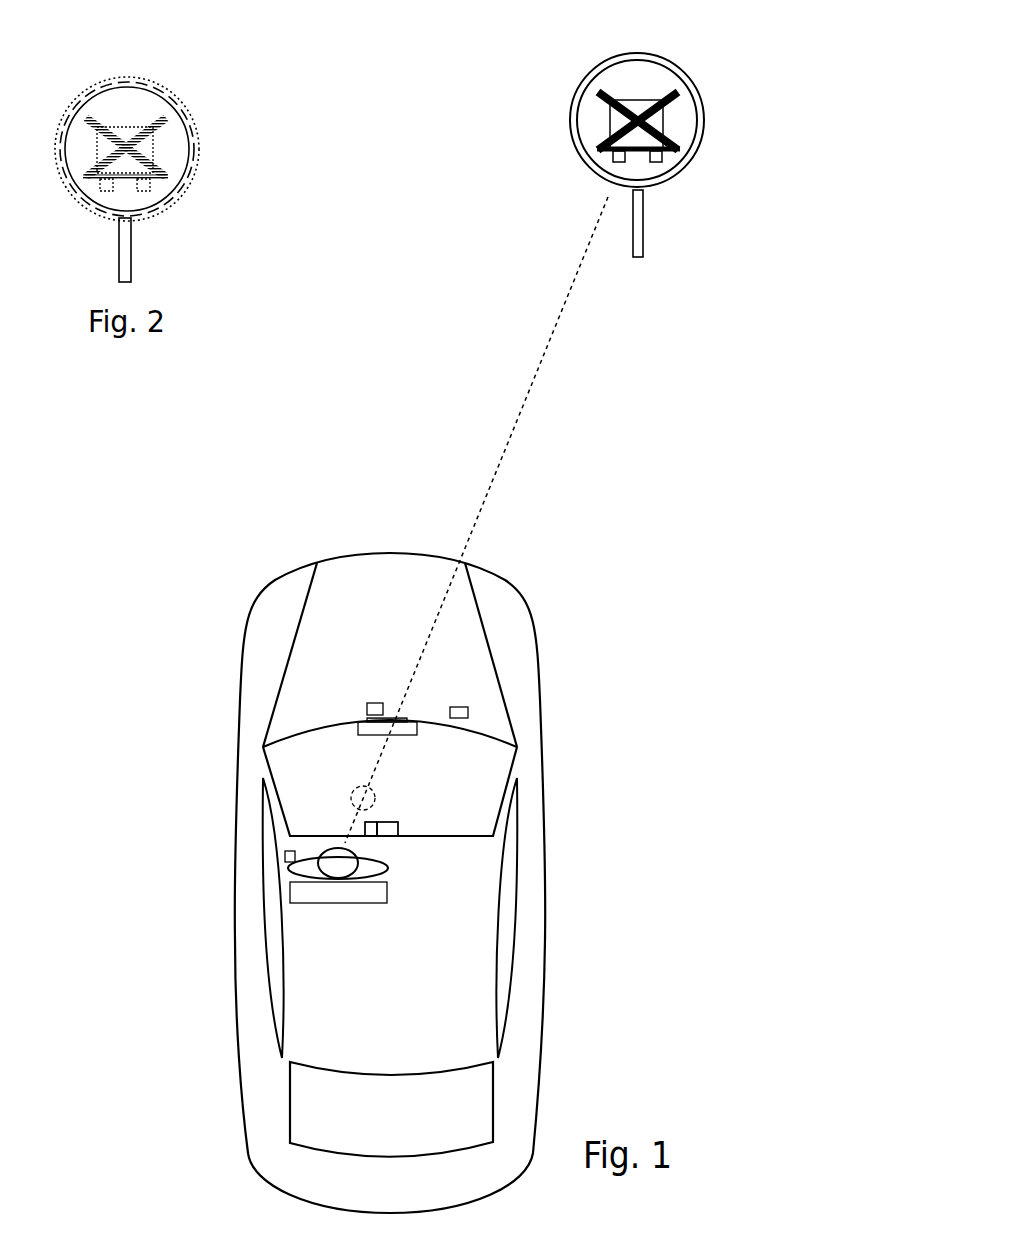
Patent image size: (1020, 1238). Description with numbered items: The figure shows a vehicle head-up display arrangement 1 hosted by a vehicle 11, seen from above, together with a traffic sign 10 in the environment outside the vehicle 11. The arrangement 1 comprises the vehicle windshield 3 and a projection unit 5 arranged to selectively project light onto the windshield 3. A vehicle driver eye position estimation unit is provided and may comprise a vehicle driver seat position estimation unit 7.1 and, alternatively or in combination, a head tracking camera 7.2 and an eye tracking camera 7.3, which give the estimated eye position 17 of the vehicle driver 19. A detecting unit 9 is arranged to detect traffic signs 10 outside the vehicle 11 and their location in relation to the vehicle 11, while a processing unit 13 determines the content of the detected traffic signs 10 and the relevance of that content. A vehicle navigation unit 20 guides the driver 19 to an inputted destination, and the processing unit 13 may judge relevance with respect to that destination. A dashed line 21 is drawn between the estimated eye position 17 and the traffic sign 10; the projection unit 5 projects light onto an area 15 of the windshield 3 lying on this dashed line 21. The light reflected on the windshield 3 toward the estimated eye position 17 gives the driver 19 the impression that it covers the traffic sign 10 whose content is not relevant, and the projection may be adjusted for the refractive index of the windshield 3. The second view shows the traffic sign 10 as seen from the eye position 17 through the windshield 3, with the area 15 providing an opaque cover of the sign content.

In FIG. 1, the vehicle head-up display arrangement 1 is at (313, 680).
In FIG. 1, the vehicle windshield 3 is at (514, 755).
In FIG. 1, the projection unit 5 is at (402, 737).
In FIG. 1, the vehicle driver seat position estimation unit 7.1 is at (283, 857).
In FIG. 1, the head tracking camera 7.2 is at (377, 838).
In FIG. 1, the eye tracking camera 7.3 is at (377, 838).
In FIG. 1, the detecting unit 9 is at (400, 822).
In FIG. 2, the traffic sign 10 is at (107, 230).
In FIG. 1, the traffic sign 10 is at (587, 192).
In FIG. 1, the vehicle 11 is at (307, 560).
In FIG. 1, the processing unit 13 is at (448, 702).
In FIG. 2, the area of the windshield 15 is at (153, 77).
In FIG. 1, the area of the windshield 15 is at (348, 795).
In FIG. 1, the estimated eye position 17 is at (358, 853).
In FIG. 1, the vehicle driver 19 is at (316, 868).
In FIG. 1, the vehicle navigation unit 20 is at (363, 700).
In FIG. 1, the dashed line 21 is at (525, 409).